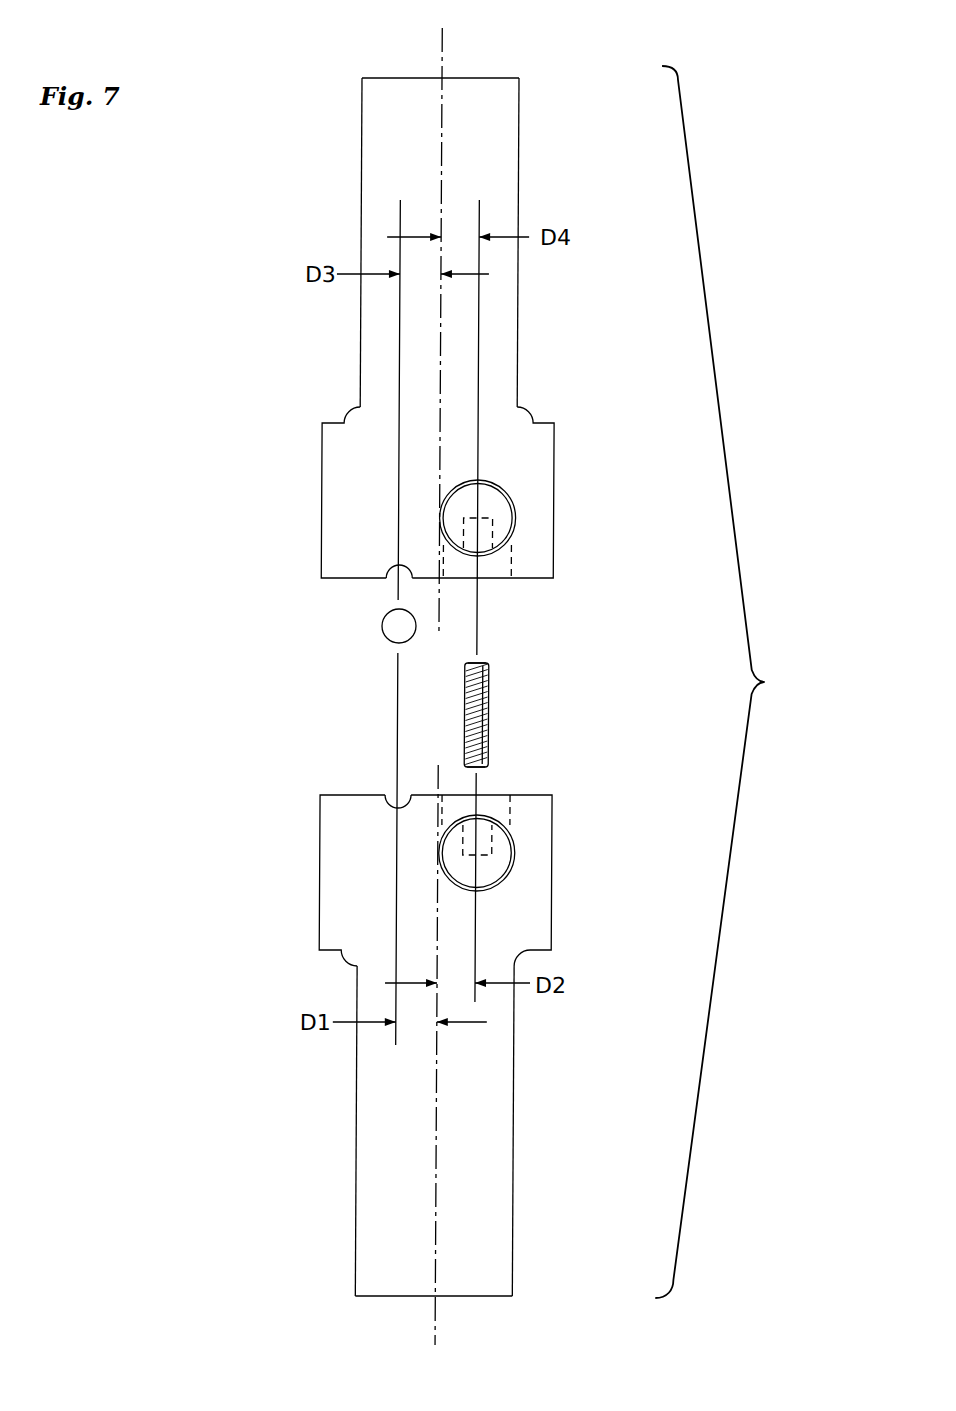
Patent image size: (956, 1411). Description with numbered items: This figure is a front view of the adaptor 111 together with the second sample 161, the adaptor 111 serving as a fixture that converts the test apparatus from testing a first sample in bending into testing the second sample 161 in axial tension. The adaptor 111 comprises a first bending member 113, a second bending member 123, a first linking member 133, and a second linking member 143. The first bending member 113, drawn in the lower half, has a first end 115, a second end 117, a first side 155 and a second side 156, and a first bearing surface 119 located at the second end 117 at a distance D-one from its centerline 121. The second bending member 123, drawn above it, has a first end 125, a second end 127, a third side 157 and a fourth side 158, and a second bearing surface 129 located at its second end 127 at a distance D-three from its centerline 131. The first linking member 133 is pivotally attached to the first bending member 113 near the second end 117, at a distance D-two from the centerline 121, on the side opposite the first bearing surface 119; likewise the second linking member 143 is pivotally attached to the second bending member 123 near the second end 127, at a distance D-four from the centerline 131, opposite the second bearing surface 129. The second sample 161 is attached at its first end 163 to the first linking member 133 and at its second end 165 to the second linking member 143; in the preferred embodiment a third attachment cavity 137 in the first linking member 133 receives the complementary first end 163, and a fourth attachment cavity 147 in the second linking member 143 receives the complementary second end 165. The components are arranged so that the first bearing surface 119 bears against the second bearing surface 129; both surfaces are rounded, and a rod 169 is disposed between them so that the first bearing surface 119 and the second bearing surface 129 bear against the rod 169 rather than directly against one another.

The adaptor 111 is at (746, 682).
The first bending member 113 is at (486, 1180).
The first end 115 is at (502, 1258).
The second end 117 is at (542, 810).
The first bearing surface 119 is at (396, 800).
The centerline 121 is at (442, 1320).
The second bending member 123 is at (493, 325).
The first end 125 is at (510, 98).
The second end 127 is at (344, 532).
The second bearing surface 129 is at (399, 574).
The centerline 131 is at (442, 48).
The first linking member 133 is at (492, 868).
The third attachment cavity 137 is at (498, 850).
The second linking member 143 is at (499, 510).
The fourth attachment cavity 147 is at (492, 540).
The first side 155 is at (519, 1100).
The second side 156 is at (362, 1102).
The third side 157 is at (520, 178).
The fourth side 158 is at (362, 168).
The second sample 161 is at (488, 712).
The first end 163 is at (489, 765).
The second end 165 is at (493, 663).
The rod 169 is at (396, 628).